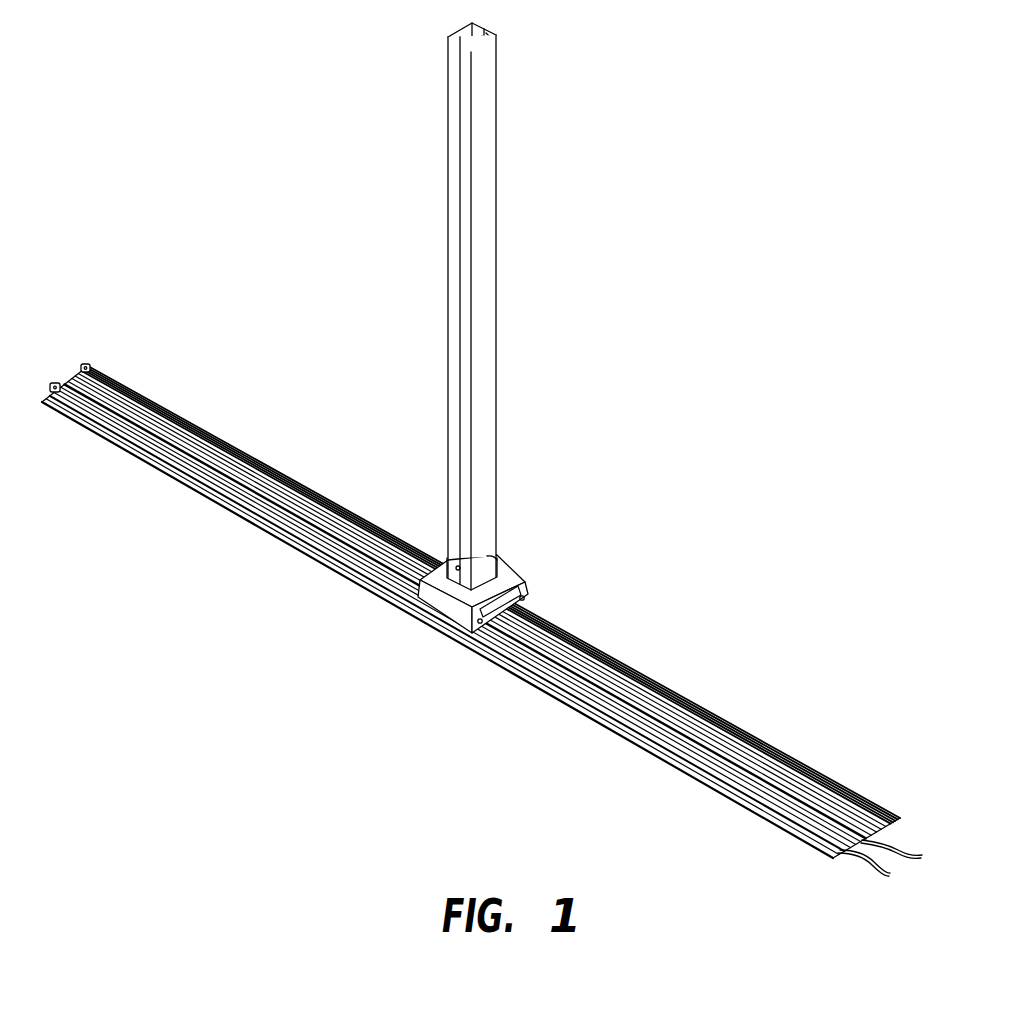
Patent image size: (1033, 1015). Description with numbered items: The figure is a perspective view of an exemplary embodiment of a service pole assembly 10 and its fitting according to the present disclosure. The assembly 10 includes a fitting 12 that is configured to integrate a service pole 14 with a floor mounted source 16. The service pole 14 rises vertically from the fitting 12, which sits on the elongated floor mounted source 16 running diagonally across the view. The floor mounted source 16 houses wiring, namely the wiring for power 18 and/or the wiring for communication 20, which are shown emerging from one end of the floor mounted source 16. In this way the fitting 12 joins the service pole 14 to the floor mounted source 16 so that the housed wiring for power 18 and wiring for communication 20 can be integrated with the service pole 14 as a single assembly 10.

The service pole assembly 10 is at (575, 347).
The fitting 12 is at (528, 577).
The service pole 14 is at (495, 167).
The floor mounted source 16 is at (697, 702).
The wiring for power 18 is at (868, 867).
The wiring for communication 20 is at (903, 843).